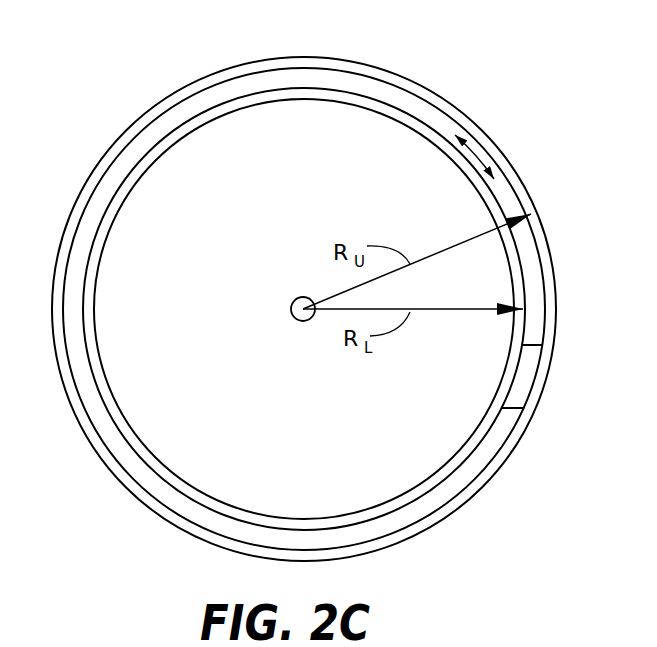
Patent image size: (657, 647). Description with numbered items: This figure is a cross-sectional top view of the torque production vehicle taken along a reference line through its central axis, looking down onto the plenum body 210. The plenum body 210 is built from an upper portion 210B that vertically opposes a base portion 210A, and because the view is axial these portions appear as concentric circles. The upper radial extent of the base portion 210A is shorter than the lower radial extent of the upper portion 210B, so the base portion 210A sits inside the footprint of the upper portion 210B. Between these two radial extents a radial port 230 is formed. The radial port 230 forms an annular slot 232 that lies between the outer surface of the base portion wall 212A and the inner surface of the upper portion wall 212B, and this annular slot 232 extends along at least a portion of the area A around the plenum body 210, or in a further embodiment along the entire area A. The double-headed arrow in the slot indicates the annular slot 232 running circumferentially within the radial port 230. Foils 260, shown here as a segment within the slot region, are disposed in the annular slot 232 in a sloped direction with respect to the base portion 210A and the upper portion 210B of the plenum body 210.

The plenum body 210 is at (289, 301).
The base portion 210A is at (210, 117).
The upper portion 210B is at (210, 72).
The base portion wall 212A is at (140, 155).
The upper portion wall 212B is at (128, 137).
The radial port 230 is at (567, 324).
The annular slot 232 is at (477, 153).
The foils 260 is at (525, 370).
The area around the plenum body A is at (353, 60).